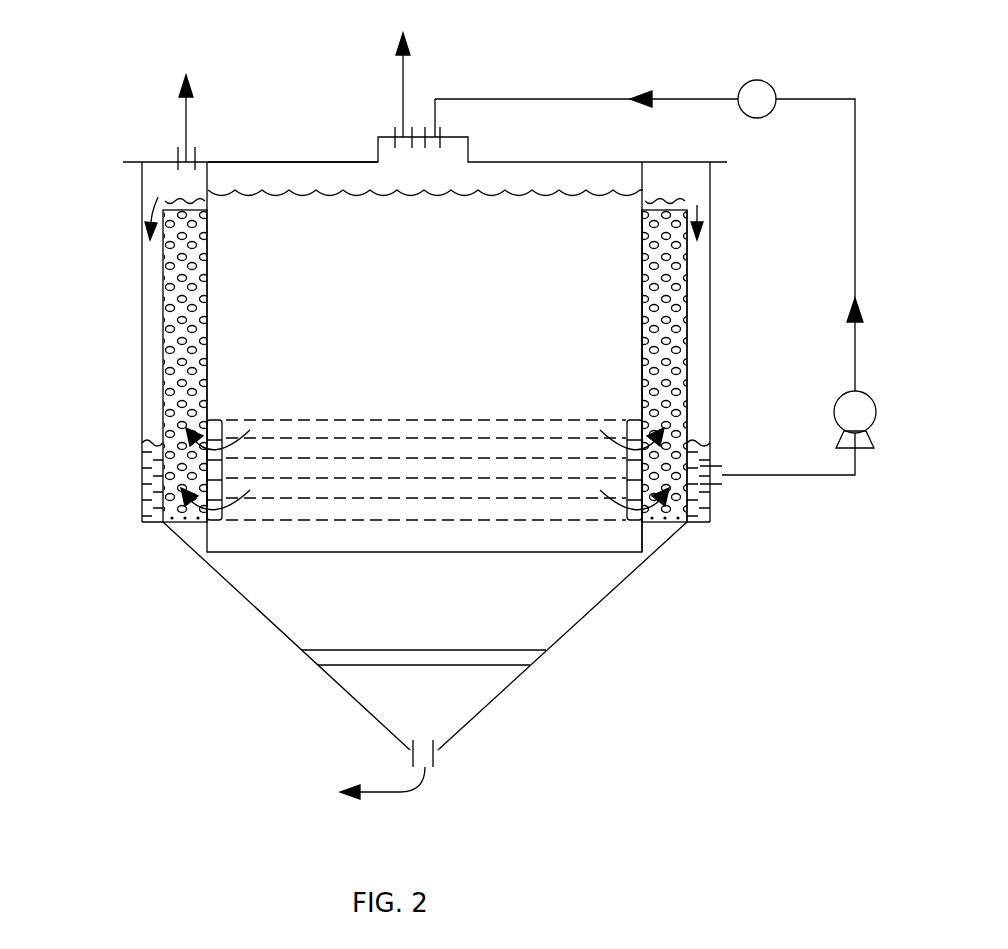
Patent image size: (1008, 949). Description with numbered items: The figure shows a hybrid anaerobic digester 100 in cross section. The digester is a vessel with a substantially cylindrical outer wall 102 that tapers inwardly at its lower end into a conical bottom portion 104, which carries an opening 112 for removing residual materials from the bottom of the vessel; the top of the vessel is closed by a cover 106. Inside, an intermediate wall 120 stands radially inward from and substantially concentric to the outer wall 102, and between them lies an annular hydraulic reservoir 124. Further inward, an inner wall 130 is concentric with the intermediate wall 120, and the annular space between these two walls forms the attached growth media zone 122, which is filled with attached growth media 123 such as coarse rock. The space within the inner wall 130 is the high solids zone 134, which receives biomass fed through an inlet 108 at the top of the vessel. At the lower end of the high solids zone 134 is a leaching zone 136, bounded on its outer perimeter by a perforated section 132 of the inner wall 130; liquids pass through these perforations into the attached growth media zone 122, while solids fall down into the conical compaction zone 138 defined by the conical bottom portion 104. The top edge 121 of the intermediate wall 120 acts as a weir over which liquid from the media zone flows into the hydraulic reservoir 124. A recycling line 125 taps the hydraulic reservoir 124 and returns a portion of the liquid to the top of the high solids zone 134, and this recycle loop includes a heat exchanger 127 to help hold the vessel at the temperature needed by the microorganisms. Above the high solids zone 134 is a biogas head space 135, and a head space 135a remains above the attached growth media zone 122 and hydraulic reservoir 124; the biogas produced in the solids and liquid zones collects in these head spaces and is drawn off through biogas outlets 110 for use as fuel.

The hybrid anaerobic digester 100 is at (245, 668).
The outer wall 102 is at (142, 398).
The conical bottom portion 104 is at (215, 572).
The top wall 106 is at (275, 160).
The inlet 108 is at (430, 133).
The biogas outlets 110 is at (396, 126).
The opening 112 is at (410, 760).
The intermediate wall 120 is at (690, 385).
The top edge 121 is at (690, 210).
The attached growth media zone 122 is at (165, 342).
The attached growth media 123 is at (170, 252).
The hydraulic reservoir 124 is at (155, 282).
The recycling line 125 is at (655, 287).
The heat exchanger 127 is at (773, 84).
The inner wall 130 is at (640, 375).
The perforated section 132 is at (232, 415).
The high solids zone 134 is at (440, 365).
The biogas head space 135 is at (440, 187).
The head space 135a is at (429, 187).
The leaching zone 136 is at (440, 515).
The conical compaction zone 138 is at (440, 607).